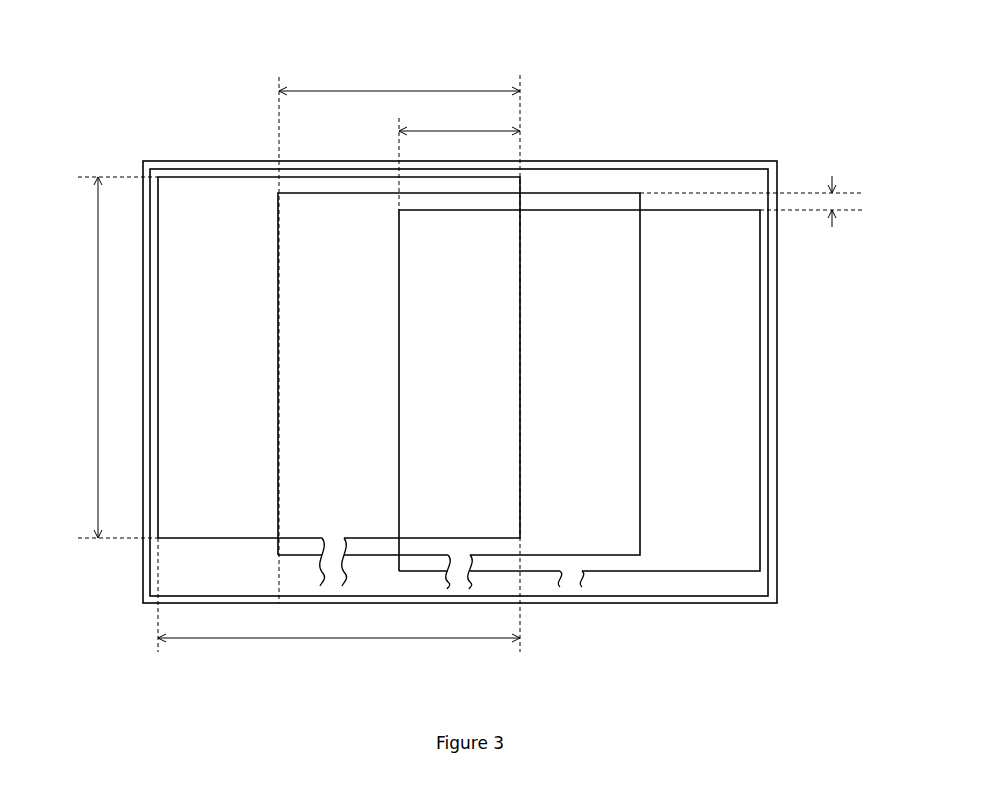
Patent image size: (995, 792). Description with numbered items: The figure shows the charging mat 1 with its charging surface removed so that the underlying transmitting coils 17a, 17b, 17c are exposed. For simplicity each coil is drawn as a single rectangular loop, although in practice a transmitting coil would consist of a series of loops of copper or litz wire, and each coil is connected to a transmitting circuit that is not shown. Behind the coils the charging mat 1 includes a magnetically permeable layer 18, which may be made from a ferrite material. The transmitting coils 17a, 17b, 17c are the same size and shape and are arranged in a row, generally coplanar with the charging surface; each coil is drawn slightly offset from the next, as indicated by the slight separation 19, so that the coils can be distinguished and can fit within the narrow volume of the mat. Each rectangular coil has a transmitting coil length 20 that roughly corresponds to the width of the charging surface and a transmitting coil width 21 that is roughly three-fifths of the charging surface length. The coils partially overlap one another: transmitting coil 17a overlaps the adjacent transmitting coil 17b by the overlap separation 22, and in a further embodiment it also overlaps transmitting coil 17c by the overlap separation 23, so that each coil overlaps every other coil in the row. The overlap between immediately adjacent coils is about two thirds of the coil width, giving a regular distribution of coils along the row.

The charging mat 1 is at (675, 161).
The magnetically permeable layer 18 is at (612, 169).
The transmitting coil 17a is at (202, 177).
The transmitting coil 17b is at (610, 555).
The transmitting coil 17c is at (713, 571).
The slight separation 19 is at (832, 215).
The transmitting coil length 20 is at (98, 347).
The transmitting coil width 21 is at (298, 638).
The overlap separation 22 is at (399, 80).
The overlap separation 23 is at (459, 120).